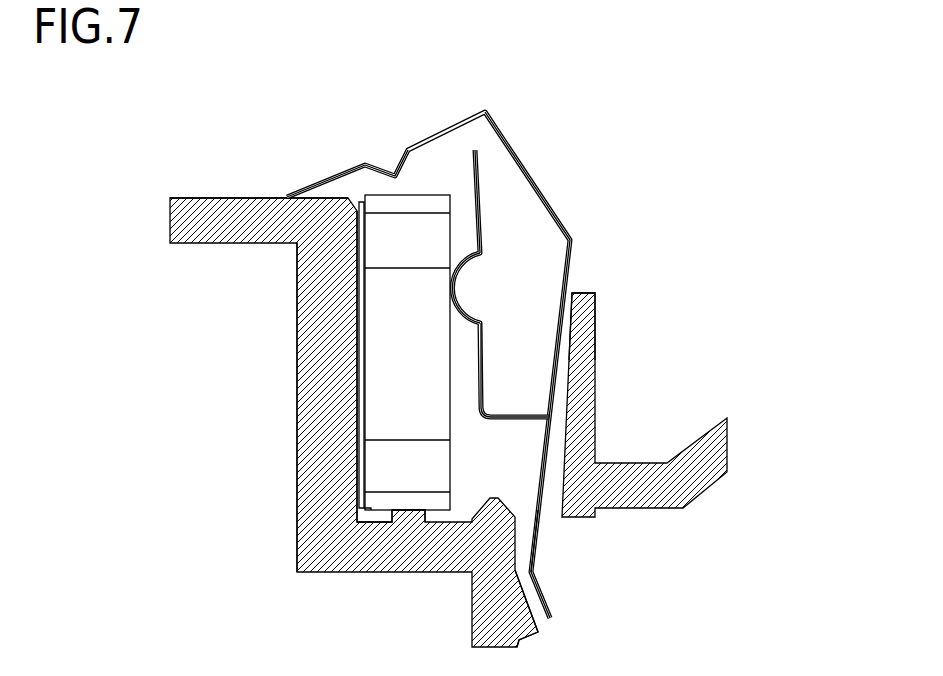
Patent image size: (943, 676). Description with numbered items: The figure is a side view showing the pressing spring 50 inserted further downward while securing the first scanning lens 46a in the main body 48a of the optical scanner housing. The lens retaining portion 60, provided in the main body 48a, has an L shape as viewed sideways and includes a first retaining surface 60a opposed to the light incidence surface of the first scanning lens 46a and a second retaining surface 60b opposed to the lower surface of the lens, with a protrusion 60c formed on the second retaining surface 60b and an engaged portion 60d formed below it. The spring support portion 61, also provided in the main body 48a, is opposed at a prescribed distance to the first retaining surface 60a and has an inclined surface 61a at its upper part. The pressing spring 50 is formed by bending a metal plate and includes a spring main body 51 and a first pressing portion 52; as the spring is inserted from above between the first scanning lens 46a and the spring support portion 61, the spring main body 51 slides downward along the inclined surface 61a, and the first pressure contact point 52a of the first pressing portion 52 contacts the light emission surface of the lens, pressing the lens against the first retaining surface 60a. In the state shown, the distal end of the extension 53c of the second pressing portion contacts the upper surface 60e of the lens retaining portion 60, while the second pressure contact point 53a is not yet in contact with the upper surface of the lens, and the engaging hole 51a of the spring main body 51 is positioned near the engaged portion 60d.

The first scanning lens 46a is at (397, 362).
The main body 48a is at (277, 533).
The pressing spring 50 is at (600, 173).
The spring main body 51 is at (570, 263).
The engaging hole 51a is at (538, 537).
The first pressing portion 52 is at (477, 175).
The first pressure contact point 52a is at (453, 290).
The second pressure contact point 53a is at (390, 166).
The extension 53c is at (313, 182).
The lens retaining portion 60 is at (327, 450).
The first retaining surface 60a is at (358, 290).
The second retaining surface 60b is at (368, 525).
The protrusion 60c is at (412, 513).
The engaged portion 60d is at (542, 632).
The upper surface 60e is at (223, 198).
The spring support portion 61 is at (595, 373).
The inclined surface 61a is at (568, 340).